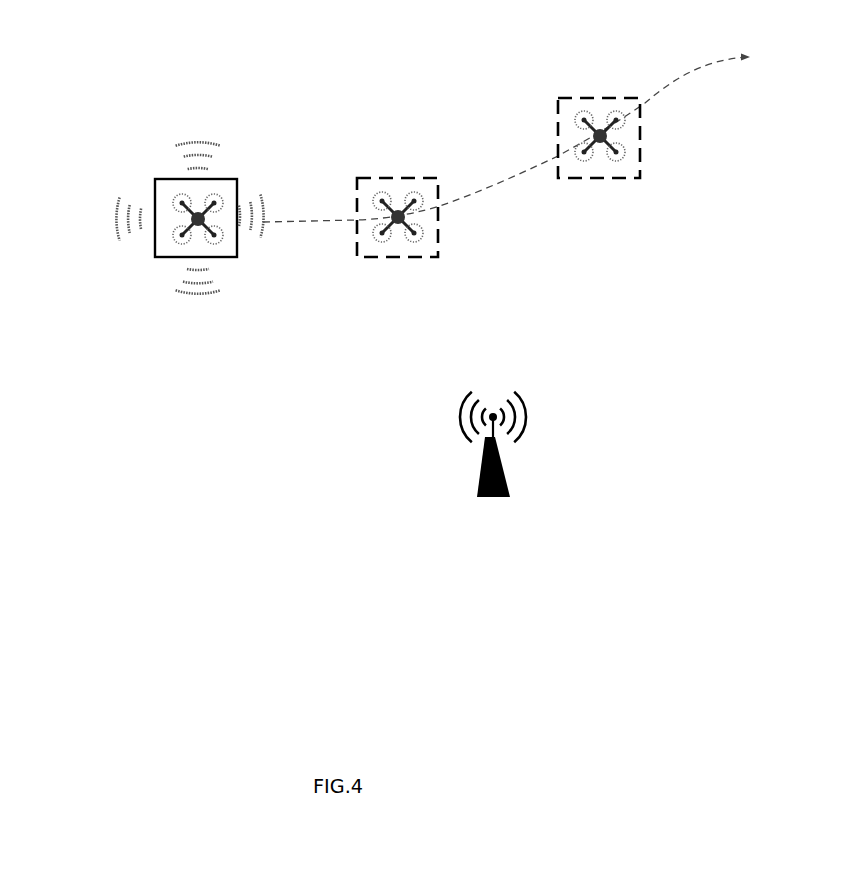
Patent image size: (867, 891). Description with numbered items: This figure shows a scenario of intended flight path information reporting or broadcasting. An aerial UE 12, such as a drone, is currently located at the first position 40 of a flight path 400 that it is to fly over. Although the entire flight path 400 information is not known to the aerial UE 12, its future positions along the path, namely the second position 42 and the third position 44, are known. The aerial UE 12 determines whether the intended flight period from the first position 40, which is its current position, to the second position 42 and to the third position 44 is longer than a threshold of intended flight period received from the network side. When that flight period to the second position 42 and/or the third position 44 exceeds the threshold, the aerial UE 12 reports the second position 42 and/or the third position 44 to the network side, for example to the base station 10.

The base station 10 is at (520, 457).
The aerial UE 12 is at (198, 190).
The first position 40 is at (167, 271).
The second position 42 is at (377, 271).
The third position 44 is at (590, 192).
The flight path 400 is at (490, 176).